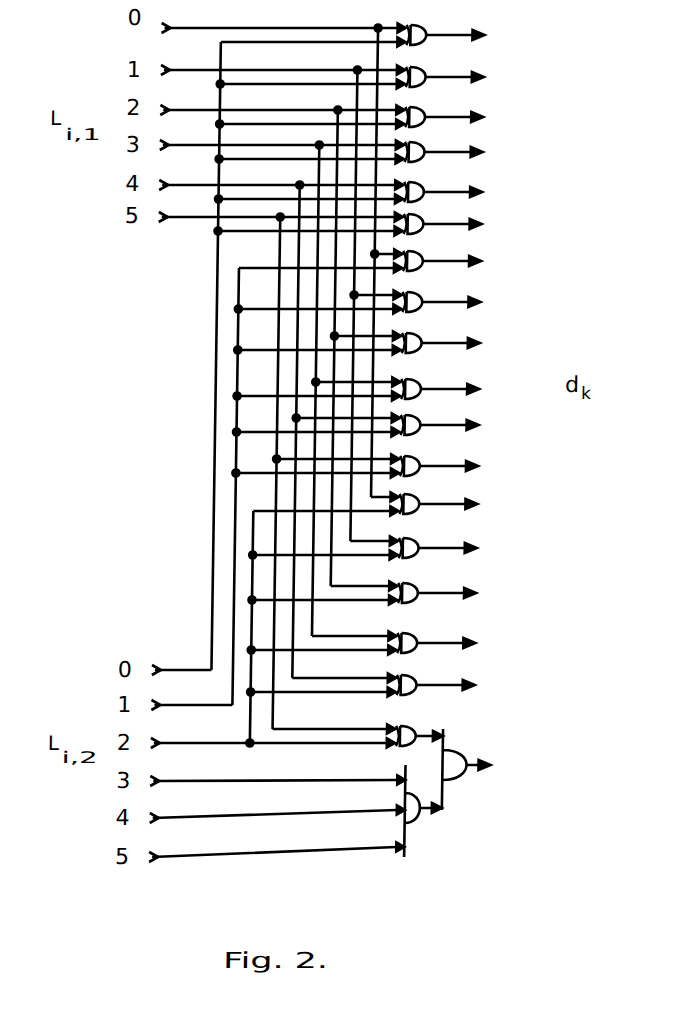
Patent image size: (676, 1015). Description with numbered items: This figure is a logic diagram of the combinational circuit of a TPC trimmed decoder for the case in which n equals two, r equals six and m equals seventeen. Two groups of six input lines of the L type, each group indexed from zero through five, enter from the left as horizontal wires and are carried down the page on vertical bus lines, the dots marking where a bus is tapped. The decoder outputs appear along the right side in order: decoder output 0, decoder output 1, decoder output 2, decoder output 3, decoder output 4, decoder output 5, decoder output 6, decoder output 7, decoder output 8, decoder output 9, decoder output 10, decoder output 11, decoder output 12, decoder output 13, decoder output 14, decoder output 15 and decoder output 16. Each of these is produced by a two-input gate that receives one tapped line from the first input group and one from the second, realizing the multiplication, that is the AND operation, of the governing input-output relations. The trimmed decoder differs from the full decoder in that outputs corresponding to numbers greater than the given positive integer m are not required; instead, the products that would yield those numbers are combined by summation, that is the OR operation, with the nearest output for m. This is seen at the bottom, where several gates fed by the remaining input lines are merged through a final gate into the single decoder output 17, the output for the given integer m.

The decoder output d_k 0 is at (344, 35).
The decoder output d_k 1 is at (344, 77).
The decoder output d_k 2 is at (343, 117).
The decoder output d_k 3 is at (343, 152).
The decoder output d_k 4 is at (342, 192).
The decoder output d_k 5 is at (341, 224).
The decoder output d_k 6 is at (380, 261).
The decoder output d_k 7 is at (378, 302).
The decoder output d_k 8 is at (377, 343).
The decoder output d_k 9 is at (376, 389).
The decoder output d_k 10 is at (382, 425).
The decoder output d_k 11 is at (381, 466).
The decoder output d_k 12 is at (391, 504).
The decoder output d_k 13 is at (389, 548).
The decoder output d_k 14 is at (388, 593).
The decoder output d_k 15 is at (388, 643).
The decoder output d_k 16 is at (387, 685).
The decoder output d_k 17 is at (339, 791).